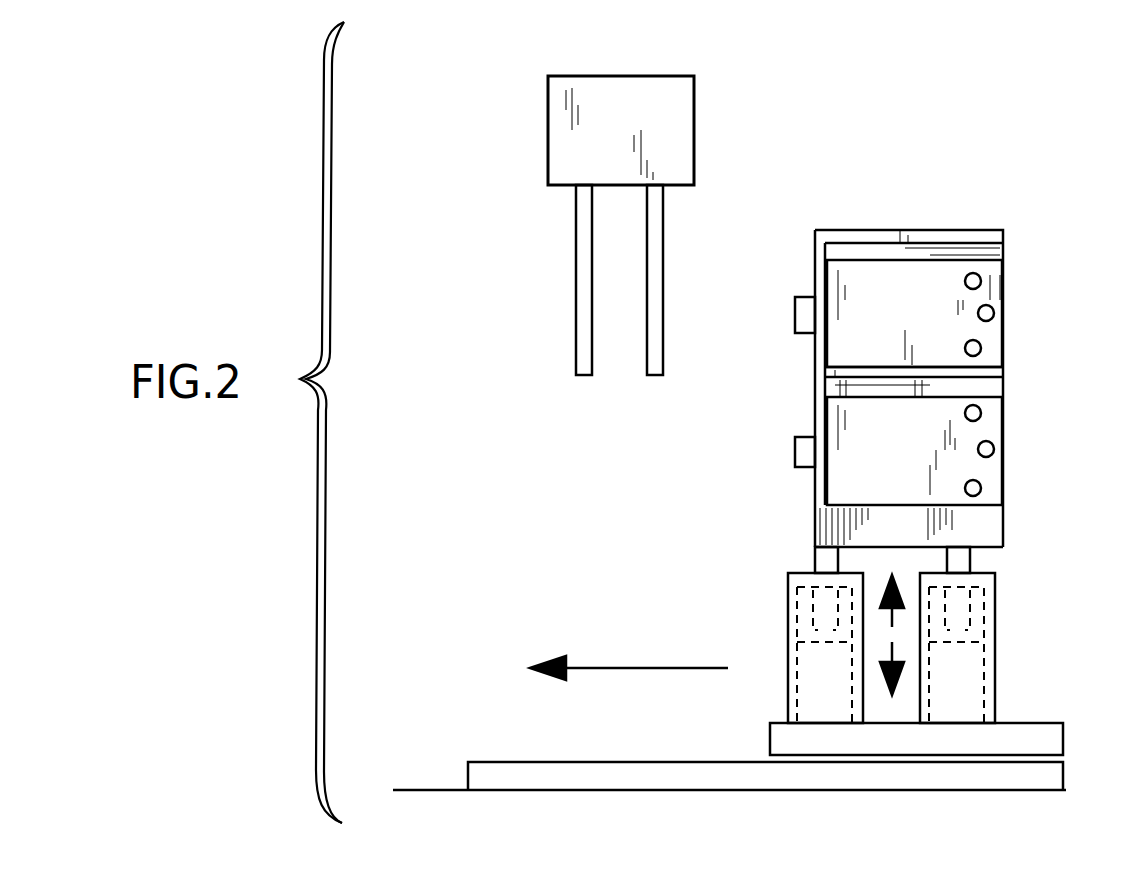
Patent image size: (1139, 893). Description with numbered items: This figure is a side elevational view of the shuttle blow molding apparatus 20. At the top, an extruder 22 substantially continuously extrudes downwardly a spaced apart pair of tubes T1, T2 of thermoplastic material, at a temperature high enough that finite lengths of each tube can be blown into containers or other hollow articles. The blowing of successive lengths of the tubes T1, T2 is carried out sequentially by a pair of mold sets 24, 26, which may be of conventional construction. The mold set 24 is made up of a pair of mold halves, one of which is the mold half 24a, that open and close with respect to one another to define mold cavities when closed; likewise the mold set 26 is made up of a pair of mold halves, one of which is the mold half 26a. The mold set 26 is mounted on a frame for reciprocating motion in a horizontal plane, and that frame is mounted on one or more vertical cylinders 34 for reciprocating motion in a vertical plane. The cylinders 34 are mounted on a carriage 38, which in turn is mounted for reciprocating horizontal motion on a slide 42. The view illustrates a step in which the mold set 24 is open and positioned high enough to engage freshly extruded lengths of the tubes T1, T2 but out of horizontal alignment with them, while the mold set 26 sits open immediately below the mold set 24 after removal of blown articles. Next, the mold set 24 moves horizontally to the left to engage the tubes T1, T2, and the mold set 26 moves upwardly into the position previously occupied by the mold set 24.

The shuttle blow molding apparatus 20 is at (805, 122).
The extruder 22 is at (637, 225).
The tube T1 is at (584, 291).
The tube T2 is at (655, 286).
The mold set 24 is at (921, 360).
The mold half 24a is at (818, 234).
The mold set 26 is at (916, 457).
The mold half 26a is at (828, 386).
The vertical cylinders 34 is at (790, 630).
The carriage 38 is at (1056, 733).
The slide 42 is at (1053, 773).